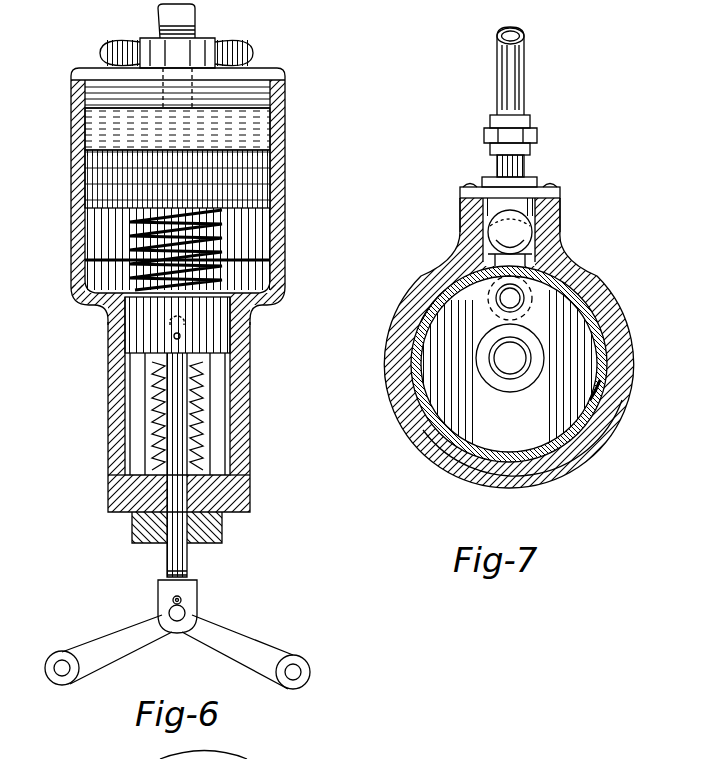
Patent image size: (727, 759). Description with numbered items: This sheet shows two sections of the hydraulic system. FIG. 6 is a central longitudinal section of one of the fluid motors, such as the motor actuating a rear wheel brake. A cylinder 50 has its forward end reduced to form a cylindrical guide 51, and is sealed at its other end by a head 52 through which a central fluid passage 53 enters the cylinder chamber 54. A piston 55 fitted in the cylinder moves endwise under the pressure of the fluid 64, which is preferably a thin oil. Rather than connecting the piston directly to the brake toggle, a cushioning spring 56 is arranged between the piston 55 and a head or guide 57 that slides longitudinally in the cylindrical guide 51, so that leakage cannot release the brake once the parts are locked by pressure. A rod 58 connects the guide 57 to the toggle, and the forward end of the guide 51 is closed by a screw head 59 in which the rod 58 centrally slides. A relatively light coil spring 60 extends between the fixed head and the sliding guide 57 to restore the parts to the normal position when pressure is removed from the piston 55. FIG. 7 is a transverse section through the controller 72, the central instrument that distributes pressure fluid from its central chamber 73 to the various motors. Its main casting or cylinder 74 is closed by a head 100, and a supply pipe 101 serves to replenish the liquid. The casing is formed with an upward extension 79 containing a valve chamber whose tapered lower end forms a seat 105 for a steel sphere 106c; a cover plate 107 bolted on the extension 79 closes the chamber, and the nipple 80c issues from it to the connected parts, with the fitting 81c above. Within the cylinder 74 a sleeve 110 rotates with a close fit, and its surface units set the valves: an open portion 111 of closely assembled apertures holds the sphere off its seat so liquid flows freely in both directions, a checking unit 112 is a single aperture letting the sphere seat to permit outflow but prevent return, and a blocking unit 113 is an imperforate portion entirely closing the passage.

In FIG. 6, the cylinder 50 is at (278, 162).
In FIG. 6, the cylindrical guide 51 is at (245, 397).
In FIG. 6, the head 52 is at (273, 67).
In FIG. 6, the fluid passage 53 is at (183, 62).
In FIG. 6, the cylinder chamber 54 is at (280, 133).
In FIG. 6, the piston 55 is at (275, 185).
In FIG. 6, the cushioning spring 56 is at (273, 232).
In FIG. 6, the head or guide 57 is at (247, 335).
In FIG. 6, the rod 58 is at (190, 565).
In FIG. 6, the screw head 59 is at (215, 530).
In FIG. 6, the coil spring 60 is at (203, 452).
In FIG. 6, the fluid 64 is at (85, 132).
In FIG. 7, the fluid 64 is at (573, 328).
In FIG. 7, the controller 72 is at (510, 358).
In FIG. 7, the central chamber 73 is at (437, 350).
In FIG. 7, the main casting or cylinder 74 is at (430, 268).
In FIG. 7, the upward extension 79 is at (555, 220).
In FIG. 7, the nipple 80c is at (526, 163).
In FIG. 7, the tube 81c is at (528, 92).
In FIG. 7, the head 100 is at (509, 364).
In FIG. 7, the supply pipe 101 is at (506, 300).
In FIG. 7, the seat 105 is at (533, 247).
In FIG. 7, the sphere 106c is at (497, 230).
In FIG. 7, the cover plate 107 is at (560, 192).
In FIG. 7, the sleeve 110 is at (613, 348).
In FIG. 7, the open sleeve portion 111 is at (605, 388).
In FIG. 7, the checking sleeve unit 112 is at (555, 452).
In FIG. 7, the blocking unit 113 is at (420, 317).